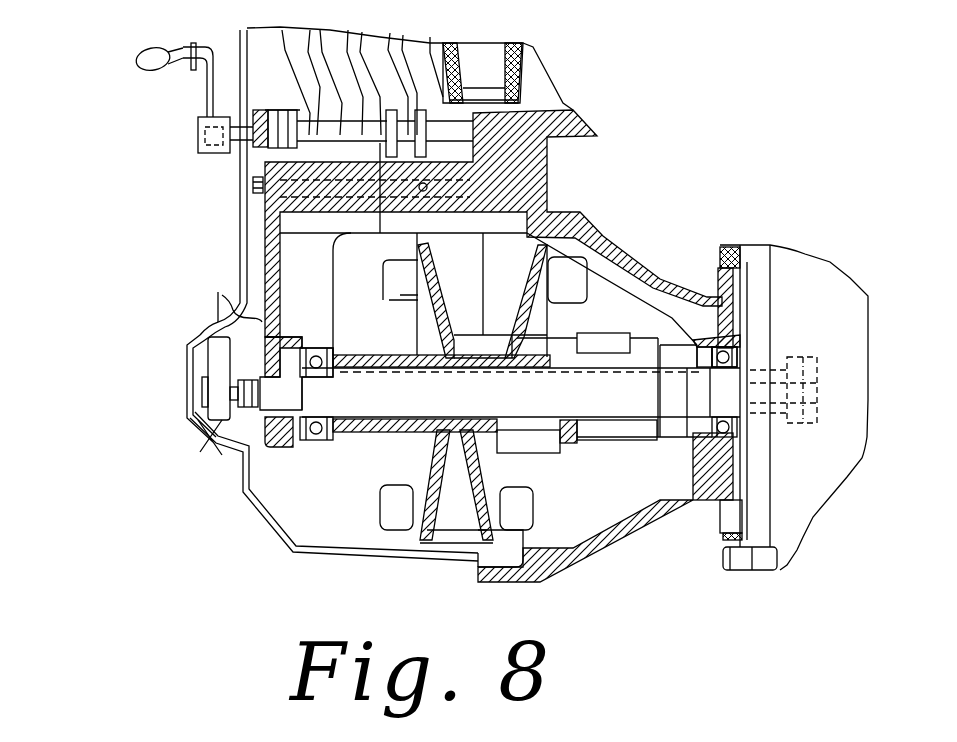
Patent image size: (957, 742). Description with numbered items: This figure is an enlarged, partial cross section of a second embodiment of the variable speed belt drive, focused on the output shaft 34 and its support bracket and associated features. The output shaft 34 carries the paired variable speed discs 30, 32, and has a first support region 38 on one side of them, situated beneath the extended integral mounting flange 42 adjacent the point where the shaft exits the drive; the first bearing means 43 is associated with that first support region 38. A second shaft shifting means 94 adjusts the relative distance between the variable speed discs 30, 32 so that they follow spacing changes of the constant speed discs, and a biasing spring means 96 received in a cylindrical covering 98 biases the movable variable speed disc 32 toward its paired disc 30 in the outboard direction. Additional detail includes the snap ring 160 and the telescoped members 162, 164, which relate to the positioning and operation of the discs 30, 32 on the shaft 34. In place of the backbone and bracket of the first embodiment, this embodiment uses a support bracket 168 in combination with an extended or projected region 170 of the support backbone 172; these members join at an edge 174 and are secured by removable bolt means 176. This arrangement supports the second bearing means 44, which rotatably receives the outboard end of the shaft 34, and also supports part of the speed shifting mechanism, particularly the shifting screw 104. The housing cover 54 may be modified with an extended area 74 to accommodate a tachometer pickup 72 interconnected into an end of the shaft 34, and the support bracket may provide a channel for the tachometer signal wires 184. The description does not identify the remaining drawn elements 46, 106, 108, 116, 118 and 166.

The variable speed disc 30 is at (455, 287).
The movable variable speed disc 32 is at (520, 290).
The output shaft 34 is at (512, 413).
The first support region 38 is at (685, 430).
The mounting flange 42 is at (683, 283).
The first bearing means 43 is at (735, 357).
The second bearing means 44 is at (328, 347).
The housing 46 is at (607, 572).
The housing cover 54 is at (277, 537).
The tachometer pickup 72 is at (213, 447).
The extended area 74 is at (187, 405).
The second shaft shifting means 94 is at (610, 283).
The biasing spring means 96 is at (603, 377).
The cylindrical covering 98 is at (667, 348).
The shifting screw 104 is at (323, 146).
The bolt 106 is at (403, 176).
The crank handle 108 is at (200, 86).
The bolt 116 is at (292, 108).
The cylinder fin 118 is at (440, 88).
The snap ring 160 is at (283, 449).
The telescoped member 162 is at (624, 434).
The telescoped member 164 is at (550, 440).
The sleeve 166 is at (412, 356).
The support bracket 168 is at (265, 262).
The extended region of support backbone 170 is at (415, 243).
The support backbone 172 is at (547, 153).
The edge 174 is at (426, 191).
The bolt means 176 is at (253, 186).
The tachometer signal wires 184 is at (218, 308).